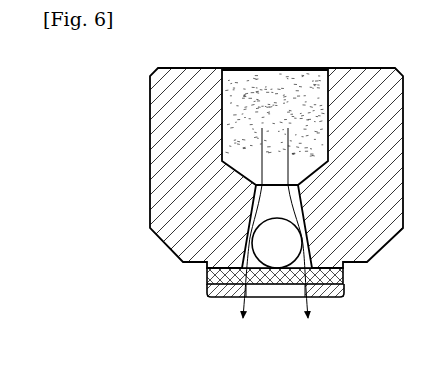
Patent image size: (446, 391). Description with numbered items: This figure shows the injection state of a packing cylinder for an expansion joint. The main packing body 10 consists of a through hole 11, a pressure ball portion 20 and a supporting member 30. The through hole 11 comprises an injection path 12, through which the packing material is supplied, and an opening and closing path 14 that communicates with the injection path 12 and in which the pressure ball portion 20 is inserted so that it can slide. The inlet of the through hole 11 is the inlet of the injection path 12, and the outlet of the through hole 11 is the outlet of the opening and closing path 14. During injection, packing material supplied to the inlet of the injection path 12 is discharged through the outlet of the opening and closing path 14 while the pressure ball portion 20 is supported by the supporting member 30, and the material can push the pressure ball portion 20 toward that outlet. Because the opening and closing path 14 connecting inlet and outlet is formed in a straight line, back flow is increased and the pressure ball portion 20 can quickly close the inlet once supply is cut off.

The main packing body 10 is at (146, 96).
The through hole 11 is at (195, 169).
The injection path 12 is at (240, 118).
The opening and closing path 14 is at (268, 201).
The pressure ball portion 20 is at (262, 243).
The supporting member 30 is at (265, 290).